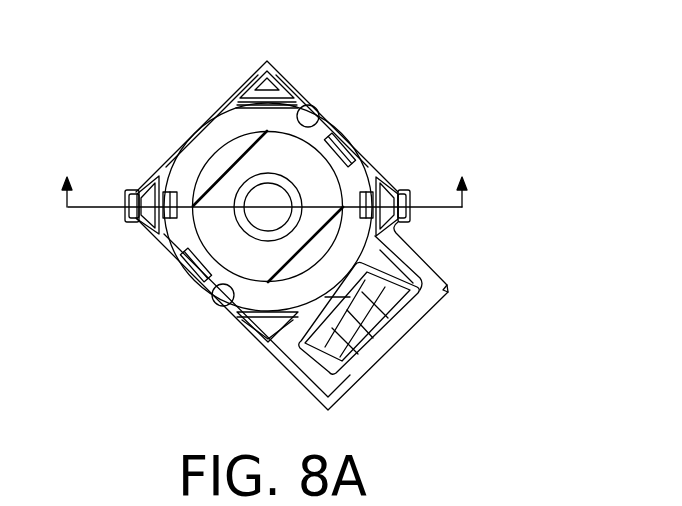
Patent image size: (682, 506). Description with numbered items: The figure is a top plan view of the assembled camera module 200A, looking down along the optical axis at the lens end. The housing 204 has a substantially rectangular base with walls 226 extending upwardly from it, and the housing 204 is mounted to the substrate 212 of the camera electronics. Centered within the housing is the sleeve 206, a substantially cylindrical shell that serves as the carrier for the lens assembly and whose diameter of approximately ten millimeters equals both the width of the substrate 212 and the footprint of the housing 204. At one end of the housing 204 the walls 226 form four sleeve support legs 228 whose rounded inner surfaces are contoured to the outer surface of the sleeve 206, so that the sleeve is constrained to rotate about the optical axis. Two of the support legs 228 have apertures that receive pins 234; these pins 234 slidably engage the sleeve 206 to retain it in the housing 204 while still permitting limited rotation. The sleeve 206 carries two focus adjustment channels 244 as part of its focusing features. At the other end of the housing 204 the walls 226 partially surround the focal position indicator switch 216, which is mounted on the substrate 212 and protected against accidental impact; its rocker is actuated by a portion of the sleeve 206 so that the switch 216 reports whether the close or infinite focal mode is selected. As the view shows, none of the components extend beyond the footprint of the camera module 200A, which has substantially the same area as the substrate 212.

The camera module 200A is at (337, 224).
The housing 204 is at (155, 166).
The sleeve 206 is at (301, 108).
The substrate 212 is at (455, 287).
The focal position indicator switch 216 is at (365, 311).
The walls 226 is at (347, 378).
The sleeve support legs 228 is at (245, 87).
The pins 234 is at (128, 207).
The focus adjustment channels 244 is at (147, 234).